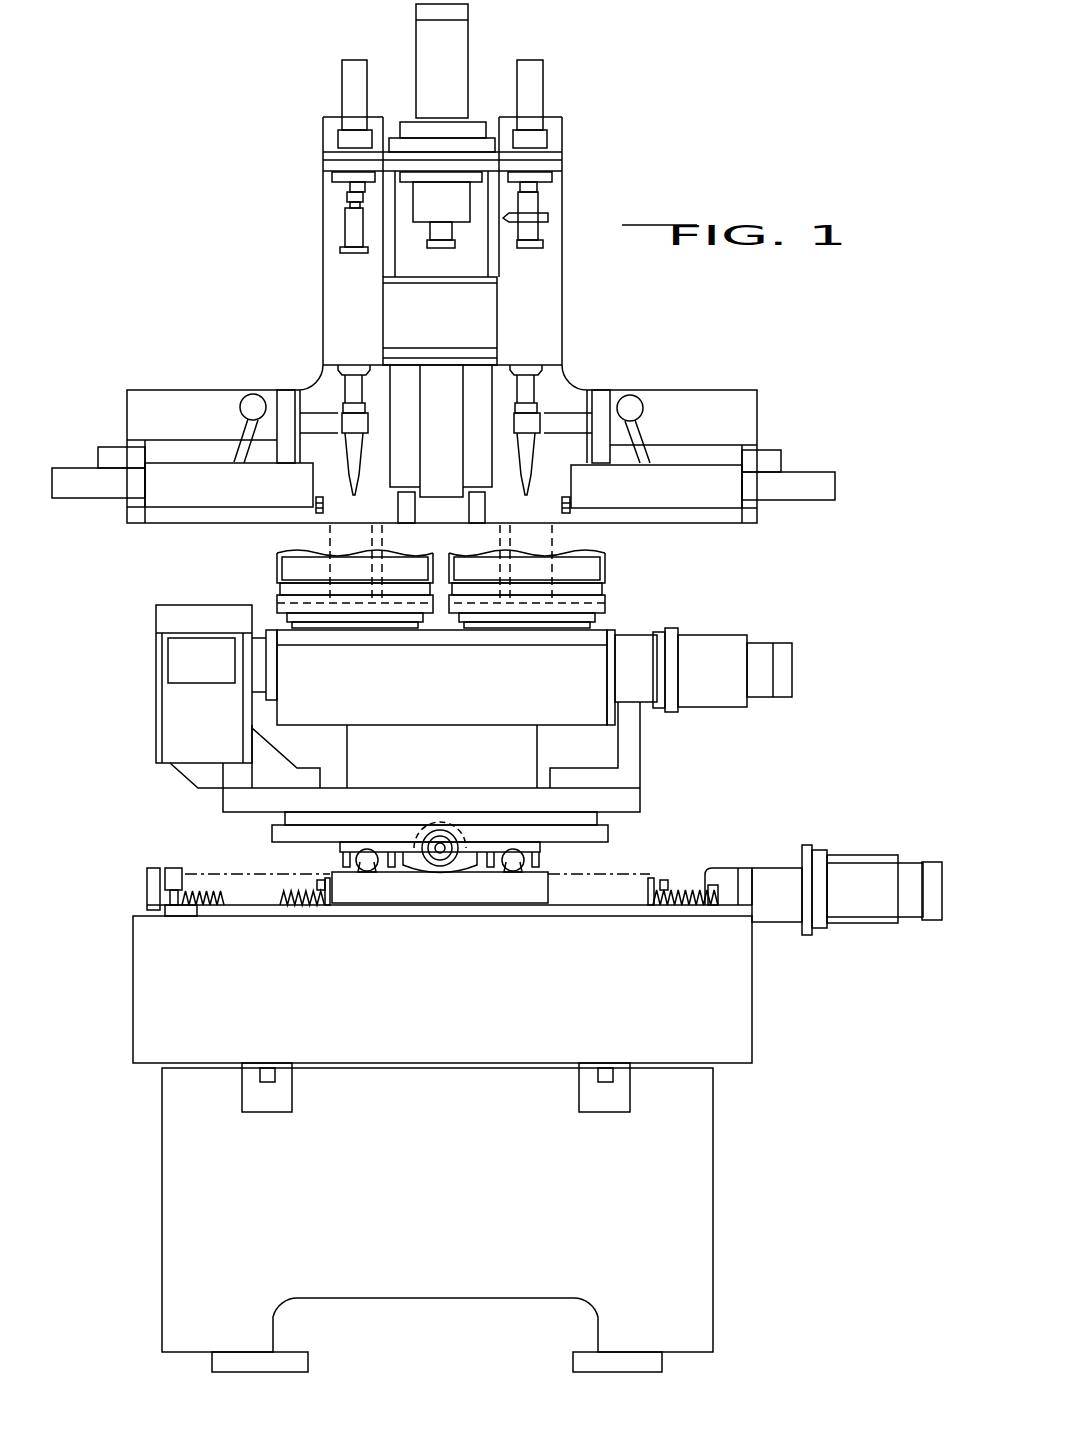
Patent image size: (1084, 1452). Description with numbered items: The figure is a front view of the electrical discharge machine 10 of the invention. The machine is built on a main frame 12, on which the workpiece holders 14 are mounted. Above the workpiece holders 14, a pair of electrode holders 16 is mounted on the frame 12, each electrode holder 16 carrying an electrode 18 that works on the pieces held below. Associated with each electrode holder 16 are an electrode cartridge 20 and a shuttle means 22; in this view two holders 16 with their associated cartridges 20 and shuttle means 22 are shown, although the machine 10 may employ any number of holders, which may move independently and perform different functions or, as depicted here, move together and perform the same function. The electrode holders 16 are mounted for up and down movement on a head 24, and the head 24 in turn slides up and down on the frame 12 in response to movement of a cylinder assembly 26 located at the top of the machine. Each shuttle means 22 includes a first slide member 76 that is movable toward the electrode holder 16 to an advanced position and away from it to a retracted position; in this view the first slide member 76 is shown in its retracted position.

The electrical discharge machine 10 is at (257, 90).
The main frame 12 is at (677, 1177).
The workpiece holders 14 is at (303, 570).
The electrode holders 16 is at (355, 455).
The electrode 18 is at (353, 498).
The electrode cartridge 20 is at (283, 400).
The shuttle means 22 is at (87, 448).
The head 24 is at (538, 293).
The cylinder assembly 26 is at (470, 54).
The first slide member 76 is at (318, 514).